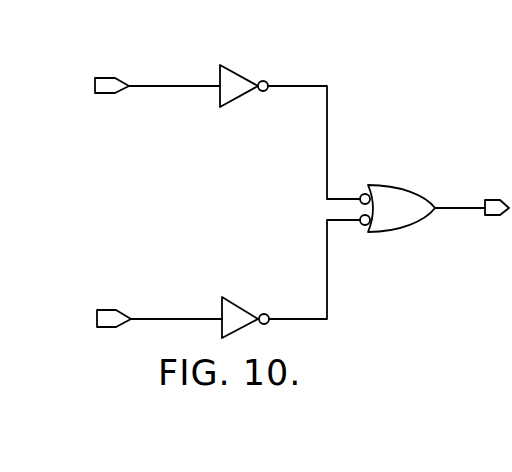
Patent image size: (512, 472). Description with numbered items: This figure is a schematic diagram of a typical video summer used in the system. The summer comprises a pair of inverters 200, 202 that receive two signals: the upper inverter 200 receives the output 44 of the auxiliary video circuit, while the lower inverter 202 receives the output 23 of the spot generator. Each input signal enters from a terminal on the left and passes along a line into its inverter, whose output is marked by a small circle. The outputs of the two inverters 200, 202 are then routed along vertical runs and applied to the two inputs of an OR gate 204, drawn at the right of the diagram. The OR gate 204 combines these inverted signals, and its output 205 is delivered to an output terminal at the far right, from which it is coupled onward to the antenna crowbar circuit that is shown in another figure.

The output of auxiliary video circuit 44 is at (160, 85).
The inverter 200 is at (243, 78).
The output of spot generator 23 is at (162, 317).
The inverter 202 is at (237, 304).
The OR gate 204 is at (395, 185).
The output of OR gate 205 is at (453, 207).